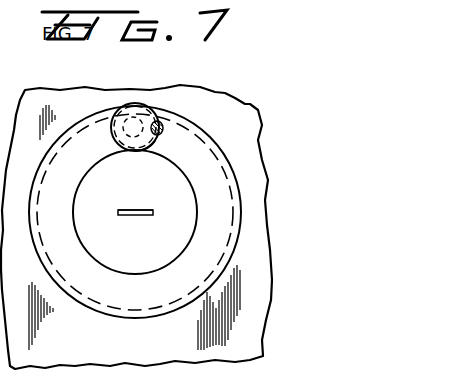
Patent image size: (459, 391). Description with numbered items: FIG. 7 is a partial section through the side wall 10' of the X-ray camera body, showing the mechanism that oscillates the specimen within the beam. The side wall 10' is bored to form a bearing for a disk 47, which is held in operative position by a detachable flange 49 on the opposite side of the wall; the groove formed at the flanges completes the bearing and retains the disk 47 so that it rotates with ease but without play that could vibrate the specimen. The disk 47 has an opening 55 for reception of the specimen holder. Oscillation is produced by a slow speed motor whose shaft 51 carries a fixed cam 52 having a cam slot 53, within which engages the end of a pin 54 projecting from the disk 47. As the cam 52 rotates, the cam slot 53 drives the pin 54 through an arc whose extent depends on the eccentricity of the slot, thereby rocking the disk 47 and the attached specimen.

The side wall 10' is at (161, 227).
The disk 47 is at (172, 247).
The detachable flange 49 is at (227, 193).
The shaft 51 is at (158, 125).
The cam 52 is at (152, 143).
The cam slot 53 is at (150, 108).
The pin 54 is at (120, 125).
The opening 55 is at (122, 216).